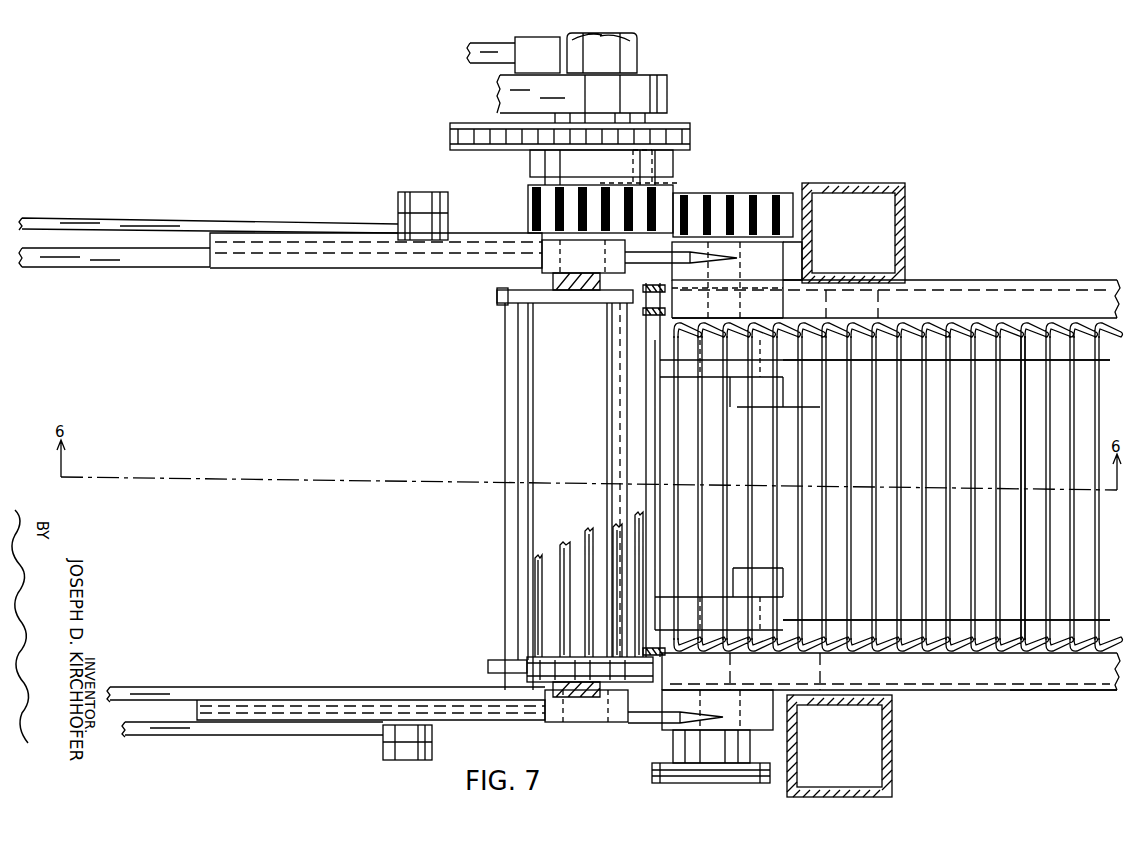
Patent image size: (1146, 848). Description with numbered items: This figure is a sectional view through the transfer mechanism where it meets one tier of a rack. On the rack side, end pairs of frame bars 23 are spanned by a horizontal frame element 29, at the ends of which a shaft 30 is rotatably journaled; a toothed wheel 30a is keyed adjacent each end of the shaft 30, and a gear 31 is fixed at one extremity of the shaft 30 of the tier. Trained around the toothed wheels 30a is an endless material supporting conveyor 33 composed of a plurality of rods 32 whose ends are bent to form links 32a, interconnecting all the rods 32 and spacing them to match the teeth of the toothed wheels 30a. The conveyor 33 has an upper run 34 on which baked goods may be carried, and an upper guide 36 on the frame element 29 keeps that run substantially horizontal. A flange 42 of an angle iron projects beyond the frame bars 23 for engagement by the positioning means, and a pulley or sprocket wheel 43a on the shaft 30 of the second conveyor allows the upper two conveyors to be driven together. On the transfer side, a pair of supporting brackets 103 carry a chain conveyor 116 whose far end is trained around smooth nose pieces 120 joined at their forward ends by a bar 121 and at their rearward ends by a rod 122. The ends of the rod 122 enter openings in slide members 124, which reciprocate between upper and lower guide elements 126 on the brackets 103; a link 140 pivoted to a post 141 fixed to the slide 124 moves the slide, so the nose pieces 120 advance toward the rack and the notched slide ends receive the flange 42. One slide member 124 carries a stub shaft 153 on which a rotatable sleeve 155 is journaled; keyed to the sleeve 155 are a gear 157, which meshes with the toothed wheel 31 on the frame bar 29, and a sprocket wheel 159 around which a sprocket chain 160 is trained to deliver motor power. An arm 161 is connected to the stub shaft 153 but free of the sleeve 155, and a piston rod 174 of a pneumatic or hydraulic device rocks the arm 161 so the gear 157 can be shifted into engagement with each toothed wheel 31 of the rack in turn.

The frame bar 23 is at (907, 201).
The horizontal frame element 29 is at (1010, 693).
The shaft 30 is at (725, 481).
The toothed wheel 30a is at (768, 333).
The gear 31 is at (760, 205).
The rod 32 is at (1078, 437).
The link 32a is at (1093, 340).
The material supporting conveyor 33 is at (1078, 570).
The upper run 34 is at (1037, 535).
The upper guide 36 is at (960, 357).
The flange 42 is at (698, 270).
The pulley or sprocket wheel 43a is at (652, 770).
The supporting bracket 103 is at (160, 267).
The chain conveyor 116 is at (578, 520).
The nose piece 120 is at (590, 303).
The bar 121 is at (618, 430).
The rod 122 is at (515, 445).
The slide member 124 is at (497, 245).
The guide element 126 is at (210, 265).
The link 140 is at (322, 222).
The post 141 is at (397, 200).
The stub shaft 153 is at (652, 165).
The rotatable sleeve 155 is at (680, 183).
The gear 157 is at (532, 212).
The sprocket wheel 159 is at (690, 129).
The sprocket chain 160 is at (690, 142).
The arm 161 is at (668, 96).
The piston rod 174 is at (489, 52).